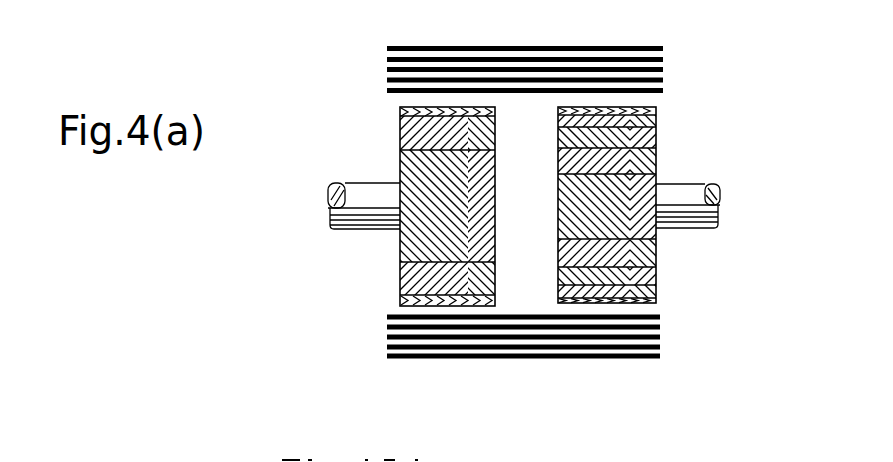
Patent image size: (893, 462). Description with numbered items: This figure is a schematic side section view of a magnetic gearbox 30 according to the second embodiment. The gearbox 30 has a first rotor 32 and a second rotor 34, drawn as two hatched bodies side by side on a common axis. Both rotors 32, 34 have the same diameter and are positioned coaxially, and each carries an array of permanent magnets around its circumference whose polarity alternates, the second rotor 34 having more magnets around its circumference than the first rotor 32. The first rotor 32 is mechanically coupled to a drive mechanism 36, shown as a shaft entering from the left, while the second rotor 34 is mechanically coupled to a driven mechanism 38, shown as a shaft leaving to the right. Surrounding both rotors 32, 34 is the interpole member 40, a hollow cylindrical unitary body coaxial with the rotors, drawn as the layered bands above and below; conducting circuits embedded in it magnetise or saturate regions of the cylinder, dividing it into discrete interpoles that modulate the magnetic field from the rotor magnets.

The gearbox 30 is at (292, 90).
The first rotor 32 is at (370, 147).
The second rotor 34 is at (666, 151).
The drive mechanism 36 is at (347, 230).
The driven mechanism 38 is at (690, 230).
The interpole member 40 is at (530, 47).